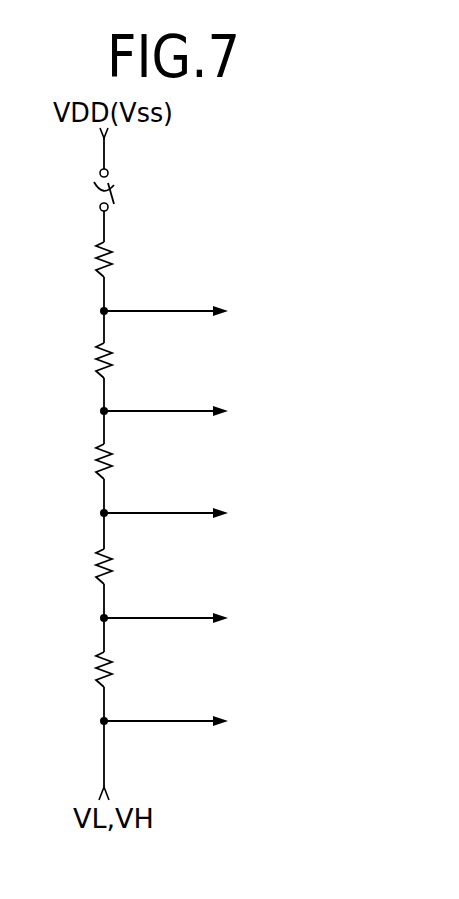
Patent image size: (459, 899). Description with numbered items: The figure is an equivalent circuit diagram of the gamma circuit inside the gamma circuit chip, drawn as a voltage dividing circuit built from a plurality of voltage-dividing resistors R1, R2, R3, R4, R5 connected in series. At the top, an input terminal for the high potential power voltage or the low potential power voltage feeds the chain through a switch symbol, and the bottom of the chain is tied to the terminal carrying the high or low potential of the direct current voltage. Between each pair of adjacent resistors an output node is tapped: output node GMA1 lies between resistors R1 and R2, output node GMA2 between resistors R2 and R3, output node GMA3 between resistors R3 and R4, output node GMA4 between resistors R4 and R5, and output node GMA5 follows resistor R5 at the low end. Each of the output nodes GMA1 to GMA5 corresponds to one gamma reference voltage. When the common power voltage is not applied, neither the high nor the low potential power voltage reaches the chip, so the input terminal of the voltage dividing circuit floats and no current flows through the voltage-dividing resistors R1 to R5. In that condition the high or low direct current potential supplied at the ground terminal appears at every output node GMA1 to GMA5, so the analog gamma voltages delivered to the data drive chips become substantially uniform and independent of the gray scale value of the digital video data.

The voltage-dividing resistor R1 is at (121, 259).
The voltage-dividing resistor R2 is at (121, 360).
The voltage-dividing resistor R3 is at (121, 461).
The voltage-dividing resistor R4 is at (121, 566).
The voltage-dividing resistor R5 is at (121, 669).
The output node GMA1 is at (204, 312).
The output node GMA2 is at (204, 412).
The output node GMA3 is at (204, 514).
The output node GMA4 is at (204, 619).
The output node GMA5 is at (204, 722).